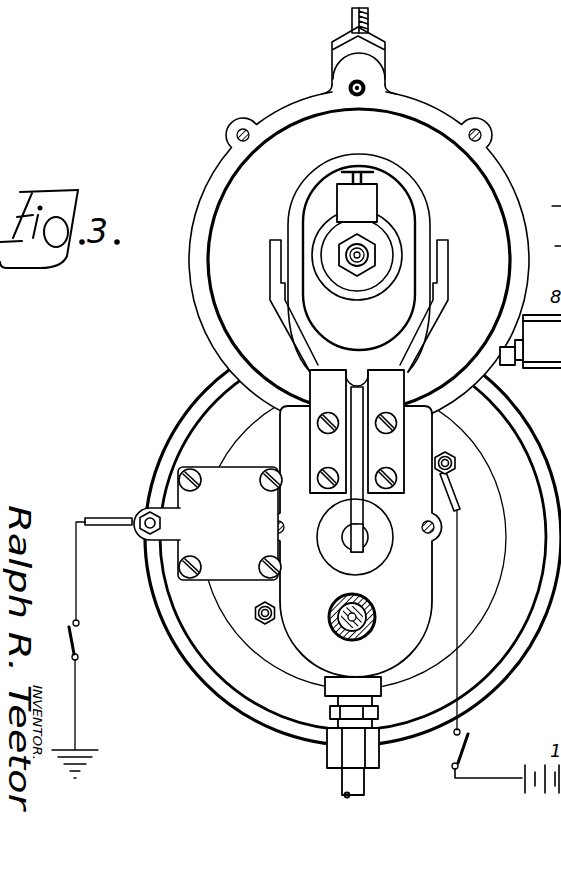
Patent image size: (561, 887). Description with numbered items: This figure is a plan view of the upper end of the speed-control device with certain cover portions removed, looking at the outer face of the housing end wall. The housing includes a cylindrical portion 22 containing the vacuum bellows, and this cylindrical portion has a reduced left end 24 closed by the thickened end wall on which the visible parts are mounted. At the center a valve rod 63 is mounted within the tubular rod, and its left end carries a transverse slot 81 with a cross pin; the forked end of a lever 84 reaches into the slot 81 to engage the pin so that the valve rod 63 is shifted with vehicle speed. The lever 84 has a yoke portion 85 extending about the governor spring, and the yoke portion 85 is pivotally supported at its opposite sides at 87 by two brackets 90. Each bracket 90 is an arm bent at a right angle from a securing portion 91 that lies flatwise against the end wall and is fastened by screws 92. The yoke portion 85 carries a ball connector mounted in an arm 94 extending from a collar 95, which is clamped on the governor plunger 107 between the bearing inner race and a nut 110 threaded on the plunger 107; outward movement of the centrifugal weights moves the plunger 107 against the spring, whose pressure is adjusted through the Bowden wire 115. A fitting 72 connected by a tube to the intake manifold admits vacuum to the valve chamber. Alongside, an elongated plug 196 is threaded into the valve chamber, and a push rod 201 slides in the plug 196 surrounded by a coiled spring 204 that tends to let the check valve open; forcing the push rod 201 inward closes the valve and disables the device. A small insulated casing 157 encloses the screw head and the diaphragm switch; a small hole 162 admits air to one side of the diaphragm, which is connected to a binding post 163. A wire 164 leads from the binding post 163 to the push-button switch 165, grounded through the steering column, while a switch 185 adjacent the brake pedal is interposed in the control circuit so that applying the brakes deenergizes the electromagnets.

The cylindrical portion 22 is at (536, 511).
The reduced left end 24 is at (494, 556).
The valve rod 63 is at (340, 540).
The fitting 72 is at (328, 710).
The transverse slot 81 is at (370, 525).
The lever 84 is at (348, 500).
The yoke portion 85 is at (310, 186).
The pivot 87 is at (270, 256).
The bracket 90 is at (285, 329).
The securing portion 91 is at (325, 381).
The screw 92 is at (323, 476).
The arm 94 is at (372, 195).
The collar 95 is at (388, 290).
The plunger 107 is at (355, 260).
The nut 110 is at (372, 252).
The Bowden wire 115 is at (355, 95).
The insulated casing 157 is at (230, 576).
The small hole 162 is at (230, 512).
The binding post 163 is at (143, 512).
The wire 164 is at (76, 577).
The push-button switch 165 is at (80, 641).
The switch 185 is at (470, 752).
The plug 196 is at (330, 611).
The push rod 201 is at (356, 628).
The coiled spring 204 is at (364, 608).